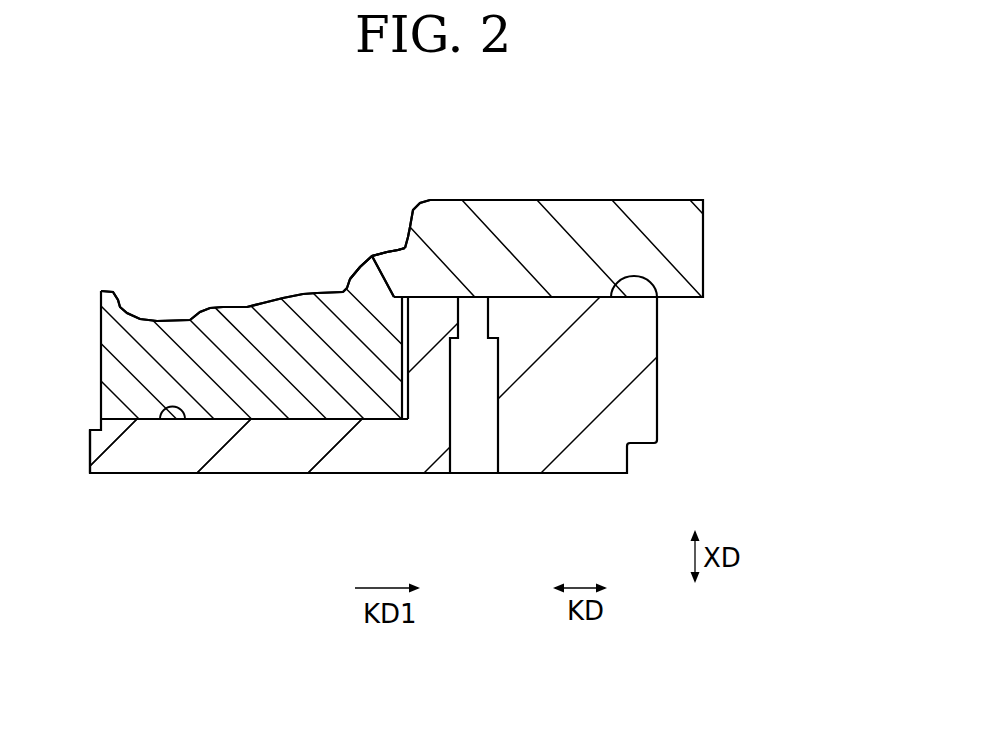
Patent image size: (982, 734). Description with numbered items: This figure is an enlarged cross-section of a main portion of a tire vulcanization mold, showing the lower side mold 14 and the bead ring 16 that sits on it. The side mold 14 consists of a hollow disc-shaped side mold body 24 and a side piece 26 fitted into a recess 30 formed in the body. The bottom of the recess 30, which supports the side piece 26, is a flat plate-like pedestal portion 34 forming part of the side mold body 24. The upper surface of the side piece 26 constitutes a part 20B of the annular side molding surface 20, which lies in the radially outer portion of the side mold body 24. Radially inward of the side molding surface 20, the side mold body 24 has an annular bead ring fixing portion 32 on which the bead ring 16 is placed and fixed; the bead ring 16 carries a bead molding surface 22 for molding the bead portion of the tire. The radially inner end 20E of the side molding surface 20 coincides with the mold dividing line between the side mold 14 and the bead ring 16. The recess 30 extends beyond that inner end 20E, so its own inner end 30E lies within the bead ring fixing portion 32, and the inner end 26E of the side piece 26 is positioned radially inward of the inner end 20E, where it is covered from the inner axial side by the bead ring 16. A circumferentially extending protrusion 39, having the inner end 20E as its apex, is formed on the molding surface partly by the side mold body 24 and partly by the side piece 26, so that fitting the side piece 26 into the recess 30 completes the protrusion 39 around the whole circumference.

The side mold 14 is at (602, 458).
The bead ring 16 is at (596, 200).
The side molding surface 20 is at (222, 256).
The part of side molding surface 20B is at (243, 305).
The inner end of side molding surface 20E is at (373, 250).
The bead molding surface 22 is at (408, 224).
The side mold body 24 is at (630, 406).
The side piece 26 is at (120, 367).
The inner end of side piece 26E is at (404, 392).
The recess 30 is at (160, 419).
The inner end of recess 30E is at (404, 357).
The bead ring fixing portion 32 is at (657, 297).
The pedestal portion 34 is at (230, 463).
The protrusion 39 is at (367, 279).